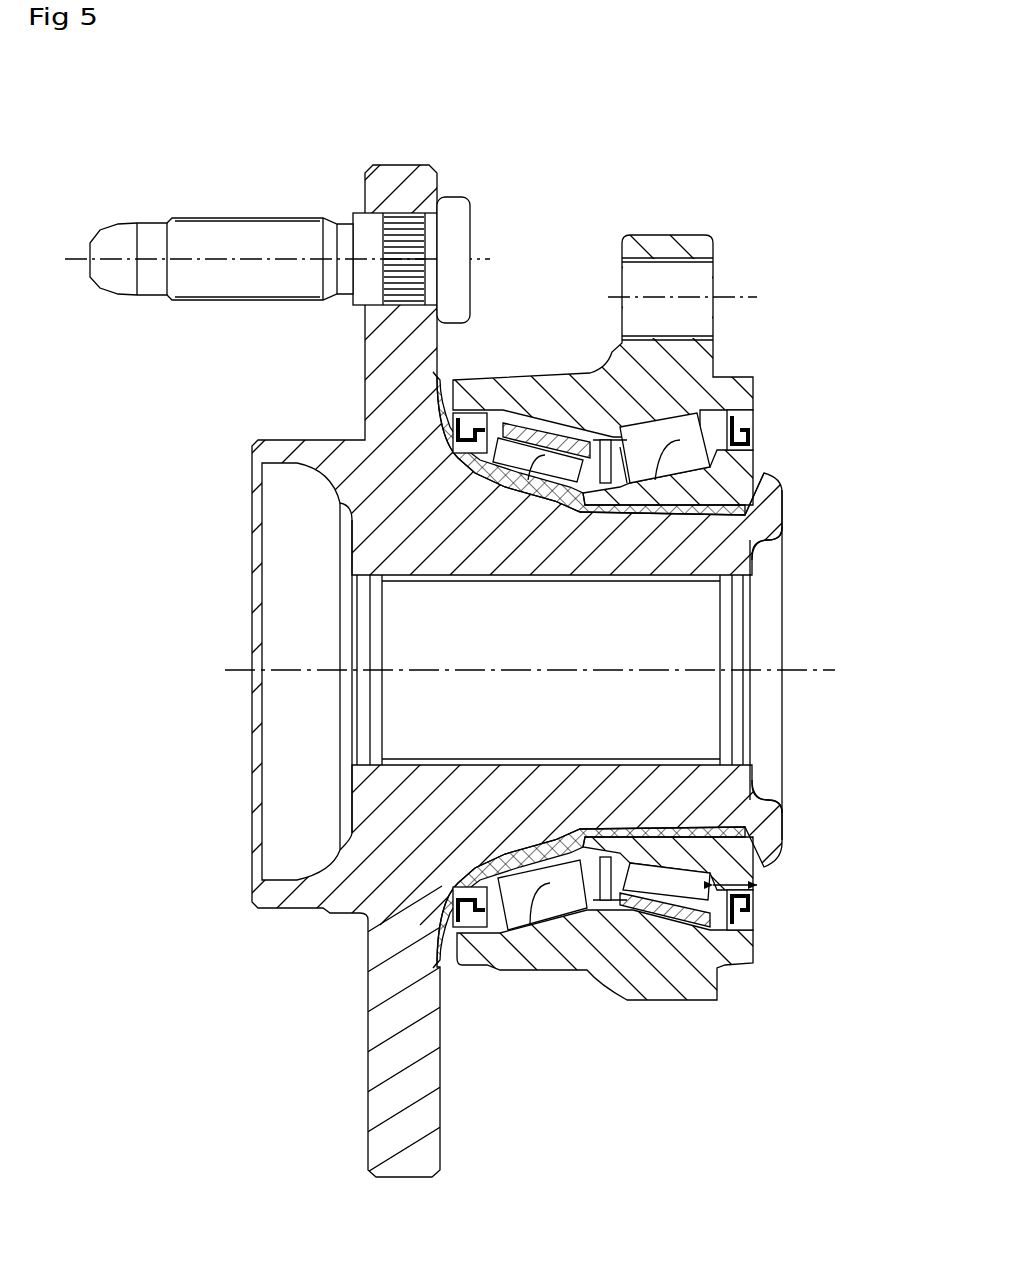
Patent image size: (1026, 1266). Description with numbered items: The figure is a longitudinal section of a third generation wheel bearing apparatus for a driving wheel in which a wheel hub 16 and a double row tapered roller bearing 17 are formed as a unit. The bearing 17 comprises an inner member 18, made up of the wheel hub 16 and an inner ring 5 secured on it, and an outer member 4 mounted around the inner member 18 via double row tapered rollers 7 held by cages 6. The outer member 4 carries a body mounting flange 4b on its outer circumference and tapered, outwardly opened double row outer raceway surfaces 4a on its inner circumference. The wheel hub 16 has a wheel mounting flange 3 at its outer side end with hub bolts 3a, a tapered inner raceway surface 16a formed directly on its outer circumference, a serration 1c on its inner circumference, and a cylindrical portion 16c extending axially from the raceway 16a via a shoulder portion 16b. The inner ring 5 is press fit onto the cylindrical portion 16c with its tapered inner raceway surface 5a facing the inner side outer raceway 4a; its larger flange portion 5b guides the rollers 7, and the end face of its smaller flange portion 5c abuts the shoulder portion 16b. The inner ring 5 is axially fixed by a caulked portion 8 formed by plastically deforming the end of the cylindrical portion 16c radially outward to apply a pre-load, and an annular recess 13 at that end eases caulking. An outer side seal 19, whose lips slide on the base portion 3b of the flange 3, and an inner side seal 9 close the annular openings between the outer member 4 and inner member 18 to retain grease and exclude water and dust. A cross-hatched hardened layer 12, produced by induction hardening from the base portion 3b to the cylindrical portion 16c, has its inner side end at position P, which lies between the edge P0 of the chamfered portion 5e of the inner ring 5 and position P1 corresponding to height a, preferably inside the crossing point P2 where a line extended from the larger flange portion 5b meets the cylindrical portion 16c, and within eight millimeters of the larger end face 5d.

The wheel mounting flange 3 is at (383, 188).
The hub bolt 3a is at (232, 245).
The base portion 3b is at (463, 940).
The outer member 4 is at (590, 385).
The outer raceway surface 4a is at (513, 400).
The body mounting flange 4b is at (678, 245).
The double row tapered roller bearing 17 is at (742, 282).
The outer side seal 19 is at (460, 430).
The inner ring 5 is at (750, 480).
The inner raceway surface 5a is at (655, 490).
The larger flange portion 5b is at (442, 452).
The smaller flange portion 5c is at (608, 830).
The larger end face 5d is at (765, 876).
The chamfered portion 5e is at (785, 830).
The wheel hub 16 is at (400, 500).
The inner raceway surface 16a is at (540, 462).
The shoulder portion 16b is at (605, 475).
The cylindrical portion 16c is at (703, 862).
The inner member 18 is at (335, 547).
The serration 1c is at (432, 585).
The hardened layer 12 is at (520, 440).
The cage 6 is at (505, 876).
The tapered roller 7 is at (540, 905).
The caulked portion 8 is at (775, 503).
The inner side seal 9 is at (745, 425).
The annular recess 13 is at (772, 543).
The height a is at (751, 473).
The position of inner side end of hardened layer P is at (758, 517).
The edge of chamfered portion P0 is at (775, 513).
The position corresponding to height a P1 is at (706, 520).
The crossing point P2 is at (760, 800).